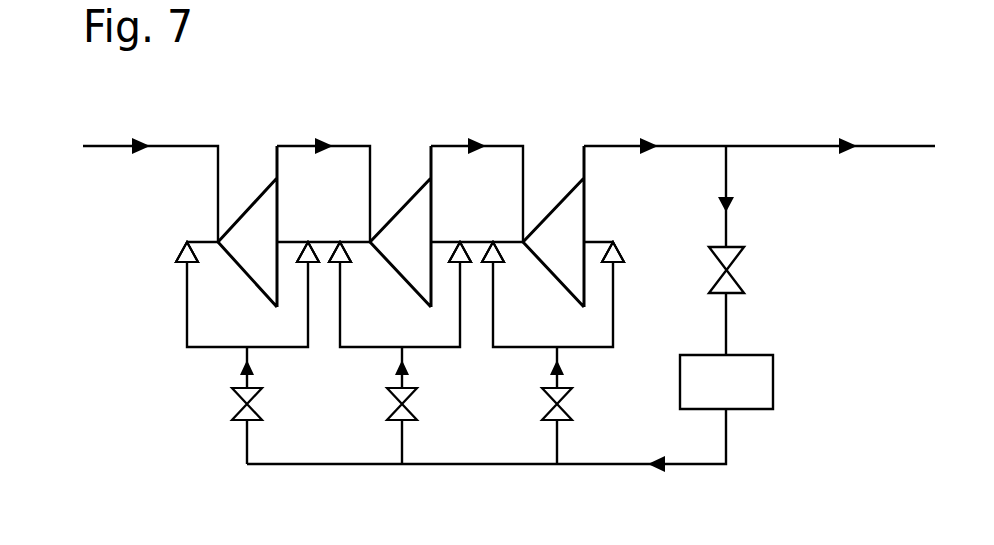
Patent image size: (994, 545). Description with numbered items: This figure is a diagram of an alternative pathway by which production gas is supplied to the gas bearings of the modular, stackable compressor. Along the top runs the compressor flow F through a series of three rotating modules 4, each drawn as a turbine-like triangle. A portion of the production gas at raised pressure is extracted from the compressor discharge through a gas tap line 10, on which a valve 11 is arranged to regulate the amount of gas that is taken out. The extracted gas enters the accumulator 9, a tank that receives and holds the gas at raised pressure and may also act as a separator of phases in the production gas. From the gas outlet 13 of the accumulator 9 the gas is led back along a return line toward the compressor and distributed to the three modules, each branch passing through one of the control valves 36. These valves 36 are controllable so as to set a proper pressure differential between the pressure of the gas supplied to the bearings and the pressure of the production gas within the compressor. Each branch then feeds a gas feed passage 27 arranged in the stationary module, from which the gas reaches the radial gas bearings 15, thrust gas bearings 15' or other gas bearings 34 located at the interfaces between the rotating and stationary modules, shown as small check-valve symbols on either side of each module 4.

The exhaust gas flow F is at (348, 146).
The rotating module 4 is at (247, 252).
The radial gas bearings 15 is at (335, 218).
The thrust gas bearings 15' is at (376, 218).
The gas bearings 34 is at (392, 227).
The gas feed passage 27 is at (308, 316).
The control valves 36 is at (250, 404).
The gas tap line 10 is at (727, 175).
The valve 11 is at (735, 268).
The accumulator 9 is at (736, 397).
The gas outlet 13 is at (695, 466).